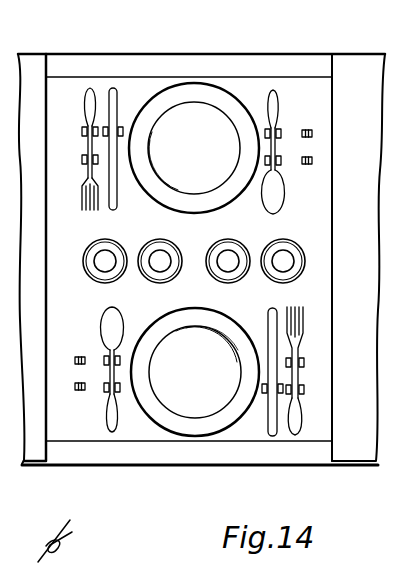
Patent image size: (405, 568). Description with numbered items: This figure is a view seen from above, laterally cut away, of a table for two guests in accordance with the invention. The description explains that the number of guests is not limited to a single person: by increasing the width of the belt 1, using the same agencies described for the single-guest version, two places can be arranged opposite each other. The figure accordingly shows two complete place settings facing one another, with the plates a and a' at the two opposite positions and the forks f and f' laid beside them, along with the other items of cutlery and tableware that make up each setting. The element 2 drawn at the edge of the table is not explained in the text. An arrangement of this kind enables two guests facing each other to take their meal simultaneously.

The belt 1 is at (312, 219).
The tray edge 2 is at (299, 453).
The plate a is at (195, 398).
The plate a' is at (197, 154).
The fork f is at (302, 369).
The fork f' is at (76, 149).